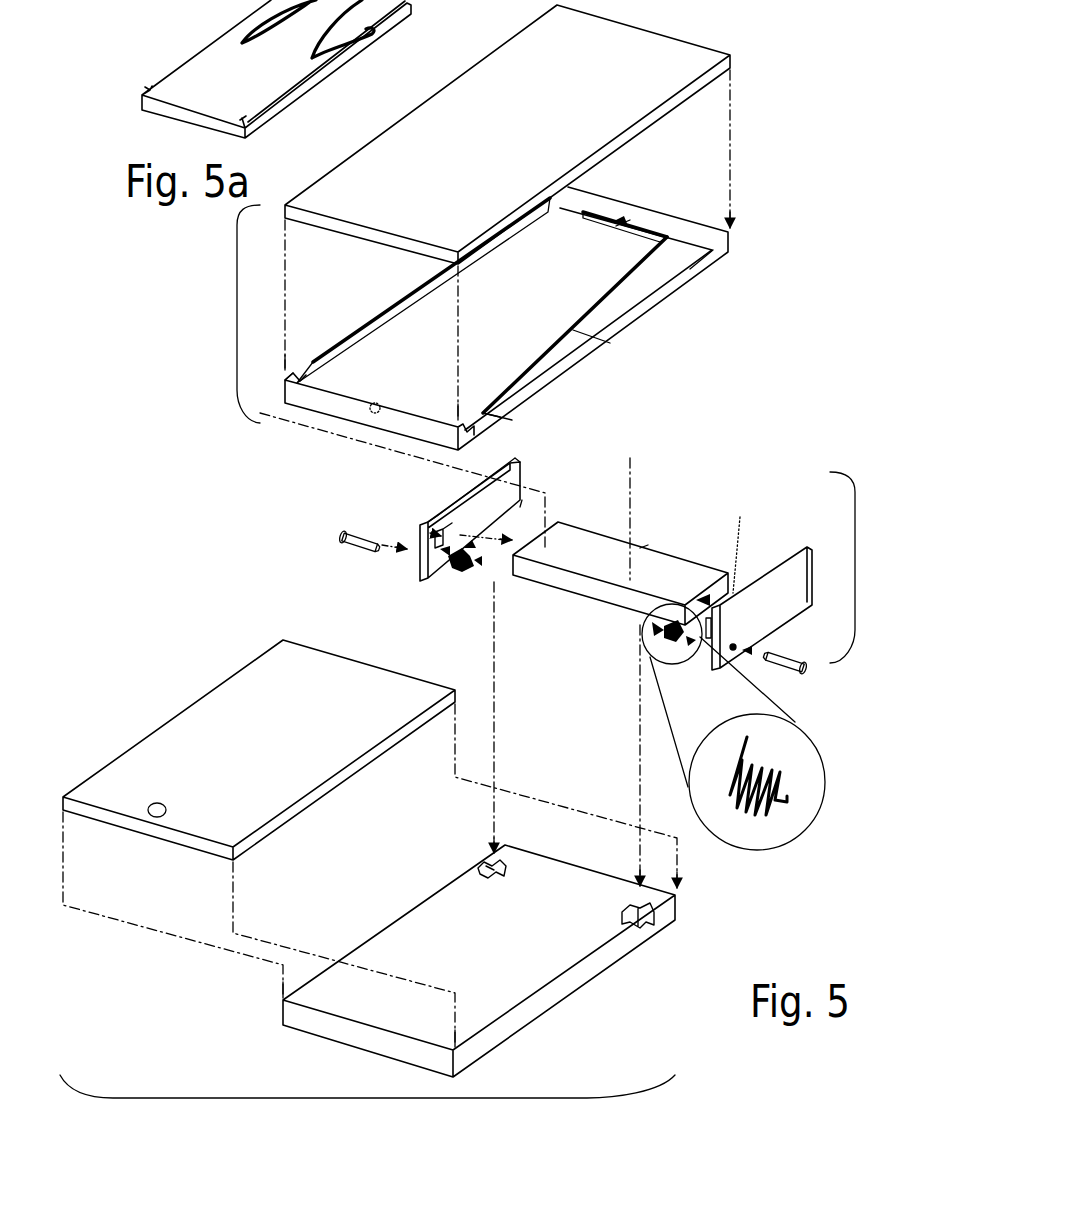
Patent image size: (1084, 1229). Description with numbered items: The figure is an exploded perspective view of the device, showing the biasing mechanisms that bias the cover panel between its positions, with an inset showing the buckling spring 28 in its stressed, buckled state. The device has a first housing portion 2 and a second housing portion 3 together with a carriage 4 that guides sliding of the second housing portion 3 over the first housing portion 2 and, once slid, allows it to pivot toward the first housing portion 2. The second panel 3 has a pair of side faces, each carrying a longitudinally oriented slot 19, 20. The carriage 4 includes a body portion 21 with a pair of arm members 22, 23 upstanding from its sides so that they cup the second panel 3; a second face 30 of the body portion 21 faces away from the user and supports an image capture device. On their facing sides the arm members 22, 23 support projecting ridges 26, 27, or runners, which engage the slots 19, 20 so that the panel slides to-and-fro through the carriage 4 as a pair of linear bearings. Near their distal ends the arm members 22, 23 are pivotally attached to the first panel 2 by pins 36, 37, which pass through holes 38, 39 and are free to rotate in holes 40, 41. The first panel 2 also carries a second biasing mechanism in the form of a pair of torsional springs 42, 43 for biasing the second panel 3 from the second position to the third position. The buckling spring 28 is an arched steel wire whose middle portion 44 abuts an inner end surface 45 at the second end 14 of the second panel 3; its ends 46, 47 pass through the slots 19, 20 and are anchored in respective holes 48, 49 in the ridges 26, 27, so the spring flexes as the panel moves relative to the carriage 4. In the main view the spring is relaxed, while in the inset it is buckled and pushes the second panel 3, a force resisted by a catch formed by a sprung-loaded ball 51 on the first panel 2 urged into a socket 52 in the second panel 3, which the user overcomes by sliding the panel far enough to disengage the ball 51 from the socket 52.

In FIG. 5, the first housing portion 2 is at (357, 1100).
In FIG. 5, the second housing portion 3 is at (237, 298).
In FIG. 5, the carriage 4 is at (856, 568).
In FIG. 5, the second end 14 is at (652, 200).
In FIG. 5, the slot 19 is at (420, 283).
In FIG. 5, the slot 20 is at (699, 282).
In FIG. 5, the body portion 21 is at (652, 566).
In FIG. 5, the arm member 22 is at (520, 507).
In FIG. 5, the arm member 23 is at (776, 587).
In FIG. 5, the projecting ridge 26 is at (453, 495).
In FIG. 5, the projecting ridge 27 is at (703, 583).
In FIG. 5a, the buckling spring 28 is at (343, 63).
In FIG. 5, the buckling spring 28 is at (610, 343).
In FIG. 5, the second face 30 is at (645, 546).
In FIG. 5, the pin 36 is at (340, 537).
In FIG. 5, the pin 37 is at (806, 674).
In FIG. 5, the hole 38 is at (418, 554).
In FIG. 5, the hole 39 is at (734, 646).
In FIG. 5, the hole 40 is at (480, 858).
In FIG. 5, the hole 41 is at (668, 920).
In FIG. 5, the torsional spring 42 is at (448, 580).
In FIG. 5, the torsional spring 43 is at (673, 640).
In FIG. 5, the middle portion 44 is at (590, 217).
In FIG. 5, the inner end surface 45 is at (623, 224).
In FIG. 5, the end 46 is at (286, 378).
In FIG. 5, the end 47 is at (510, 416).
In FIG. 5, the hole 48 is at (433, 523).
In FIG. 5, the hole 49 is at (743, 541).
In FIG. 5, the sprung-loaded ball 51 is at (166, 808).
In FIG. 5, the socket 52 is at (375, 410).